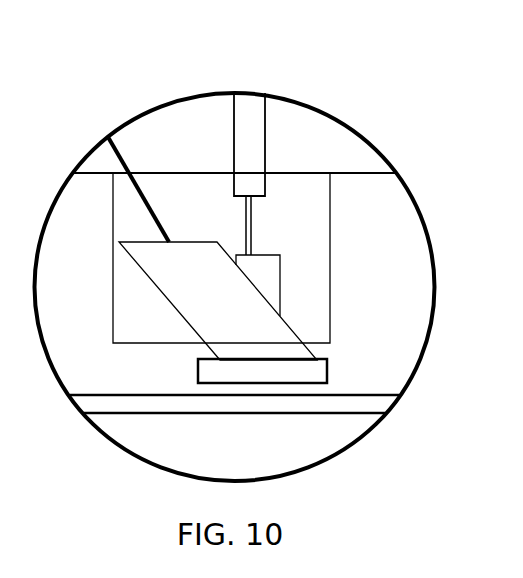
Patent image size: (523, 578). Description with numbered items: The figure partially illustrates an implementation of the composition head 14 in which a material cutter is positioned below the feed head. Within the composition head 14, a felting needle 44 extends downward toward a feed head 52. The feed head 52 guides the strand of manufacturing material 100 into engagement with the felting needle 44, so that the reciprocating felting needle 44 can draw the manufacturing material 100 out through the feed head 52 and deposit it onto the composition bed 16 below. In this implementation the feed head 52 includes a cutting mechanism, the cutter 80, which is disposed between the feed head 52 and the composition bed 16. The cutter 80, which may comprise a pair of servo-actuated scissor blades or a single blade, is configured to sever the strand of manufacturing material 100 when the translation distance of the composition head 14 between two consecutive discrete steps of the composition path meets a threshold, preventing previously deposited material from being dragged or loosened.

The composition head 14 is at (189, 104).
The composition bed 16 is at (144, 428).
The felting needle 44 is at (252, 224).
The feed head 52 is at (282, 281).
The cutter 80 is at (330, 362).
The manufacturing material 100 is at (115, 150).